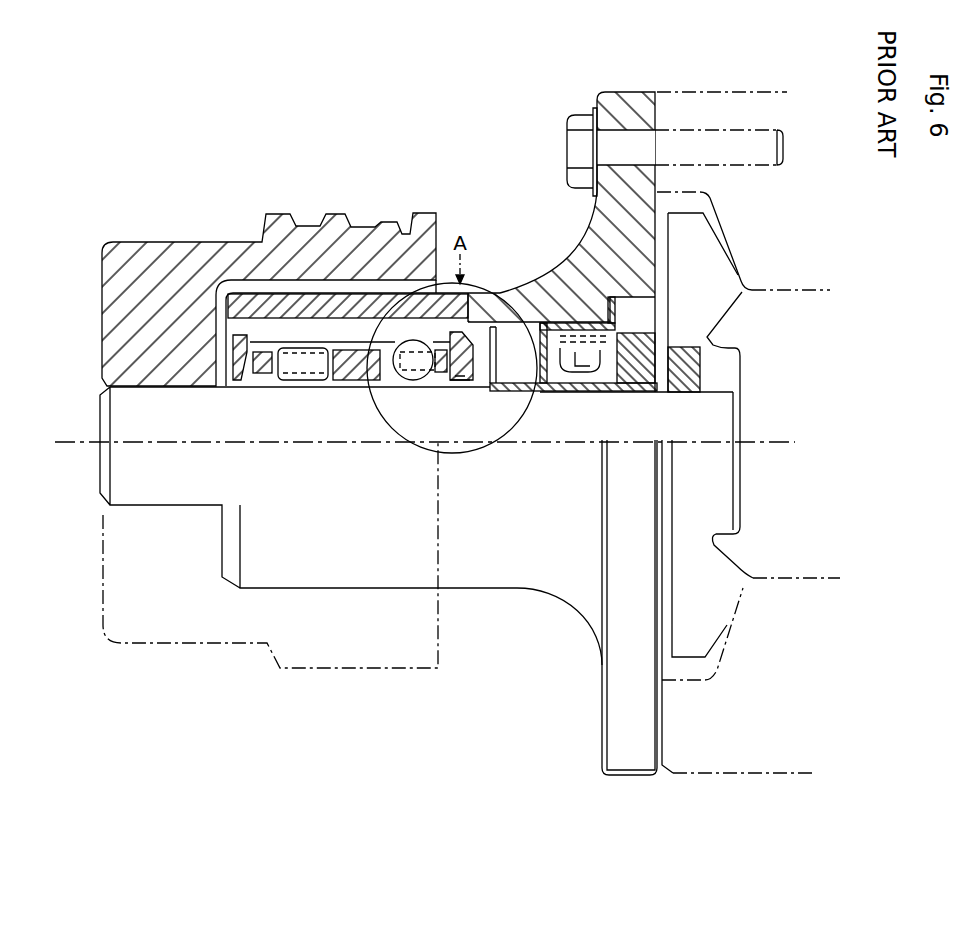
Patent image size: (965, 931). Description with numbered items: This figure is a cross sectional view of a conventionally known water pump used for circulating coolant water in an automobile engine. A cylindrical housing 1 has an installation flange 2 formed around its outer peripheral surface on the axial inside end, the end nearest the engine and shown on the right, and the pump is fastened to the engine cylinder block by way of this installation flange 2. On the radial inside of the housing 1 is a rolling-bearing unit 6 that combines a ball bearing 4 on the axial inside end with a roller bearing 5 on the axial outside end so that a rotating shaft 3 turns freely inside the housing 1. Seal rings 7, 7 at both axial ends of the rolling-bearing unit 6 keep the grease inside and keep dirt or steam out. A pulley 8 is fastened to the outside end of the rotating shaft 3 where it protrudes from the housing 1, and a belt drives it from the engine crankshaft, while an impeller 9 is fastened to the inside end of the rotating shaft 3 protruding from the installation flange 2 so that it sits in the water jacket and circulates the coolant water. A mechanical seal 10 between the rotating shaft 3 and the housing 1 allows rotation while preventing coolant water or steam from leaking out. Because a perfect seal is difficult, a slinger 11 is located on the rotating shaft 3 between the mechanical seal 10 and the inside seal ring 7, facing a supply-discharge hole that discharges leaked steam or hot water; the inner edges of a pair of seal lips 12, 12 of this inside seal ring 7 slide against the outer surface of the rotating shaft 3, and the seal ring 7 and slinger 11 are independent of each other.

The housing 1 is at (547, 288).
The installation flange 2 is at (621, 100).
The rotating shaft 3 is at (130, 411).
The ball bearing 4 is at (410, 348).
The roller bearing 5 is at (288, 357).
The rolling-bearing unit 6 is at (310, 284).
The seal ring 7 is at (237, 353).
The pulley 8 is at (178, 268).
The impeller 9 is at (708, 247).
The mechanical seal 10 is at (605, 378).
The slinger 11 is at (514, 388).
The seal lip 12 is at (450, 382).